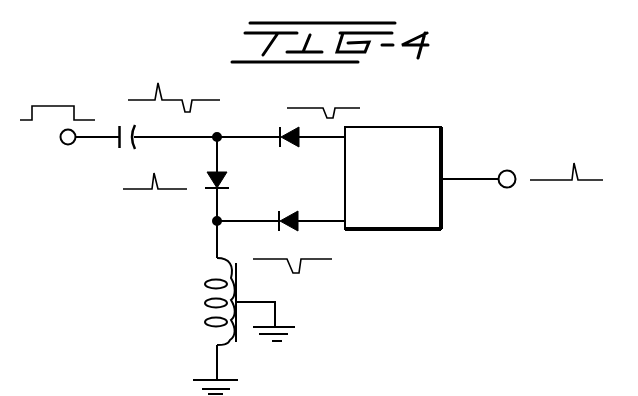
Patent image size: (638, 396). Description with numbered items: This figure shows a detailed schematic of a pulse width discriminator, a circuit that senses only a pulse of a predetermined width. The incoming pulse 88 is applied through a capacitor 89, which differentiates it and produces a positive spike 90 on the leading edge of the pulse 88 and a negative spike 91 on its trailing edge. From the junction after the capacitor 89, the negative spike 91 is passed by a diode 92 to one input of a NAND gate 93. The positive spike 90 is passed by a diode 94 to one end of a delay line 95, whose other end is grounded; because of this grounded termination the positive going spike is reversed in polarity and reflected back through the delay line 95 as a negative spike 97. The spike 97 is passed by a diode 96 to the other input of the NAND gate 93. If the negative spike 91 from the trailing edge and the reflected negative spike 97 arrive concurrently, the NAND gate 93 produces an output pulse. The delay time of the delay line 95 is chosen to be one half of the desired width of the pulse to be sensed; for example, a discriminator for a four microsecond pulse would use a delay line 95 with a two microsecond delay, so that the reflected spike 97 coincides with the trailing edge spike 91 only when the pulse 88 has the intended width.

The incoming pulse 88 is at (56, 105).
The capacitor 89 is at (118, 127).
The positive spike 90 is at (158, 85).
The negative spike 91 is at (190, 110).
The diode 92 is at (292, 147).
The NAND gate 93 is at (445, 142).
The diode 94 is at (207, 180).
The delay line 95 is at (205, 302).
The diode 96 is at (285, 228).
The negative spike 97 is at (302, 270).